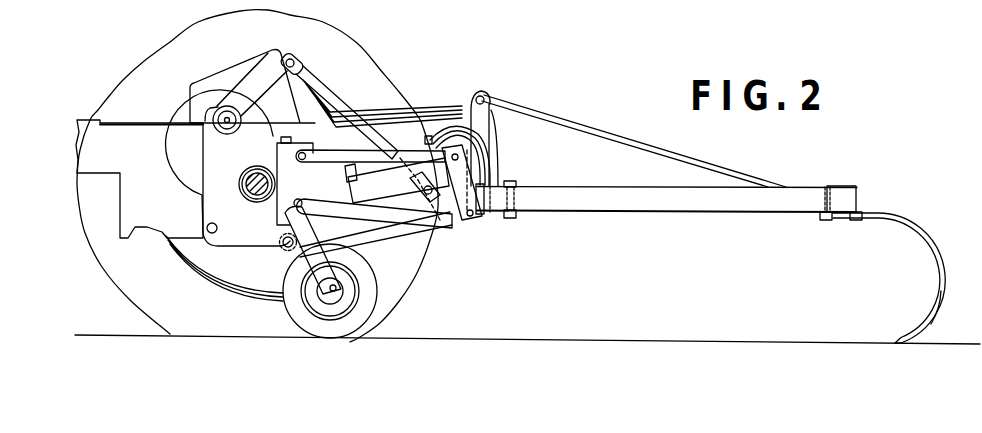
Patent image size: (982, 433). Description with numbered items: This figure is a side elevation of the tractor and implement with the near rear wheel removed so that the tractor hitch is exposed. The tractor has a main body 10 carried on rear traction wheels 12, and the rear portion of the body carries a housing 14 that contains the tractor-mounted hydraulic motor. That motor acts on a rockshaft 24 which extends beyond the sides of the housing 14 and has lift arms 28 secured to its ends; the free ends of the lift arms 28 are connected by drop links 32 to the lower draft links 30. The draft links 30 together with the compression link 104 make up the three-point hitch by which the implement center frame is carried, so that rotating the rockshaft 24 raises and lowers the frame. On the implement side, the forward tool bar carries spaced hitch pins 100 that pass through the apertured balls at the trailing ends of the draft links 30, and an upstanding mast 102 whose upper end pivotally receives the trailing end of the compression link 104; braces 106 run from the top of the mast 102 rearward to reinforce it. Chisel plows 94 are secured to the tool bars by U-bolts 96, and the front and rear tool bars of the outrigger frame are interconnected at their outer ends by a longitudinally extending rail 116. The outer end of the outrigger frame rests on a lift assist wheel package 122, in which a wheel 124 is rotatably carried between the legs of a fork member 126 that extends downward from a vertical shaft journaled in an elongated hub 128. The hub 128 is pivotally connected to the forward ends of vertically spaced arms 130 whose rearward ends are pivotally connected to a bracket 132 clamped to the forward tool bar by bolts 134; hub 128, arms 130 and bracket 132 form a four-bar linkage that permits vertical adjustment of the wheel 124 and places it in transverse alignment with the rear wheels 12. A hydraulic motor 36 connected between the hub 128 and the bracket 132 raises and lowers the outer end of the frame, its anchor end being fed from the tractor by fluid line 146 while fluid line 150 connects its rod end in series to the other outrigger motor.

The main body 10 is at (90, 127).
The rear traction wheels 12 is at (128, 78).
The housing 14 is at (203, 82).
The rockshaft 24 is at (241, 119).
The lift arms 28 is at (260, 85).
The lower draft links 30 is at (388, 225).
The drop links 32 is at (325, 102).
The hydraulic cylinder 36 is at (373, 176).
The chisel plows 94 is at (928, 317).
The U-bolts 96 is at (857, 186).
The hitch pins 100 is at (478, 219).
The mast 102 is at (493, 117).
The compression link 104 is at (400, 120).
The braces 106 is at (637, 147).
The rail 116 is at (660, 203).
The lift assist wheel package 122 is at (258, 304).
The wheel 124 is at (373, 321).
The fork member 126 is at (363, 247).
The hub 128 is at (268, 204).
The arms 130 is at (316, 168).
The bracket 132 is at (452, 222).
The bolts 134 is at (518, 204).
The fluid line 146 is at (430, 130).
The fluid line 150 is at (352, 173).